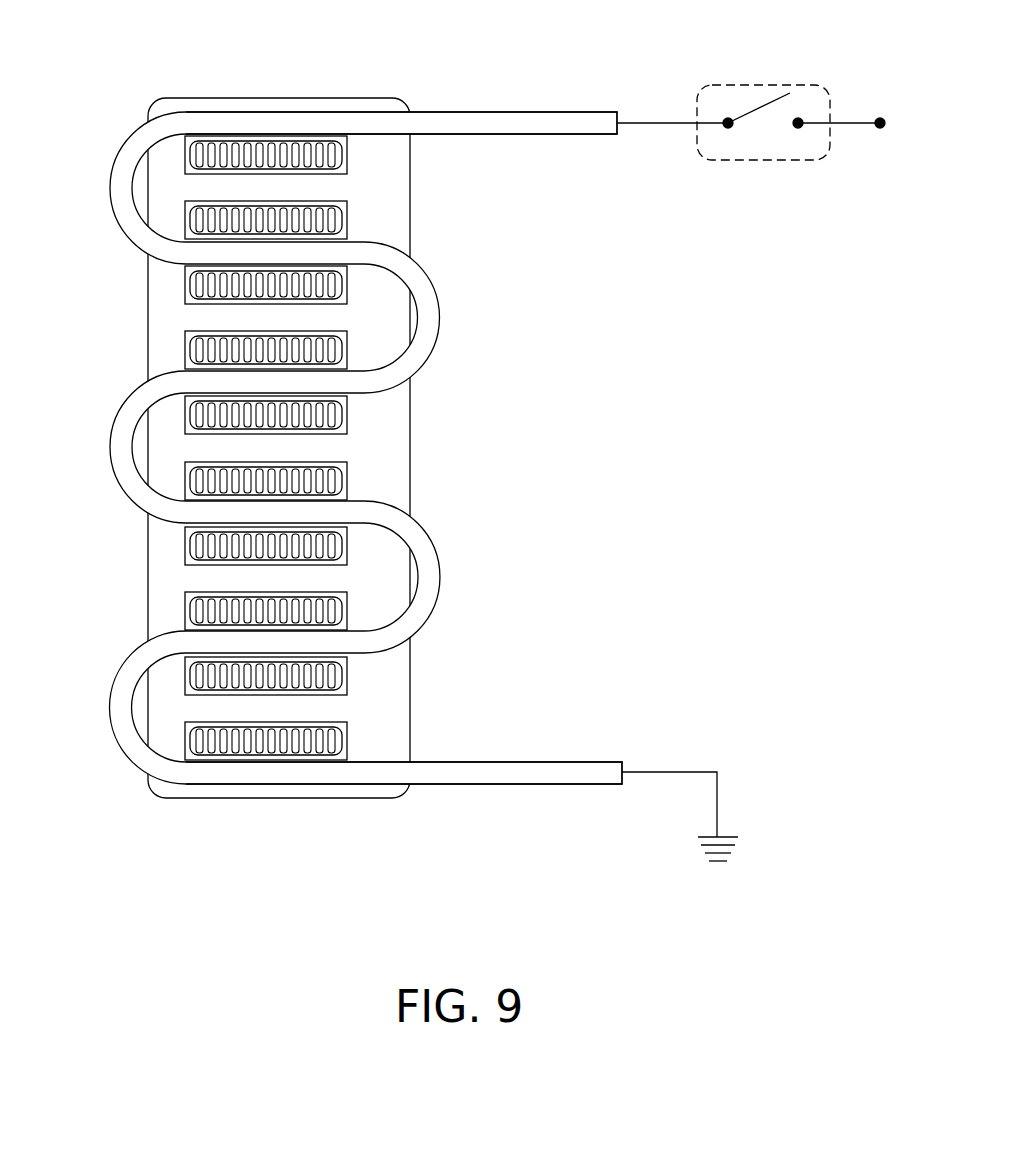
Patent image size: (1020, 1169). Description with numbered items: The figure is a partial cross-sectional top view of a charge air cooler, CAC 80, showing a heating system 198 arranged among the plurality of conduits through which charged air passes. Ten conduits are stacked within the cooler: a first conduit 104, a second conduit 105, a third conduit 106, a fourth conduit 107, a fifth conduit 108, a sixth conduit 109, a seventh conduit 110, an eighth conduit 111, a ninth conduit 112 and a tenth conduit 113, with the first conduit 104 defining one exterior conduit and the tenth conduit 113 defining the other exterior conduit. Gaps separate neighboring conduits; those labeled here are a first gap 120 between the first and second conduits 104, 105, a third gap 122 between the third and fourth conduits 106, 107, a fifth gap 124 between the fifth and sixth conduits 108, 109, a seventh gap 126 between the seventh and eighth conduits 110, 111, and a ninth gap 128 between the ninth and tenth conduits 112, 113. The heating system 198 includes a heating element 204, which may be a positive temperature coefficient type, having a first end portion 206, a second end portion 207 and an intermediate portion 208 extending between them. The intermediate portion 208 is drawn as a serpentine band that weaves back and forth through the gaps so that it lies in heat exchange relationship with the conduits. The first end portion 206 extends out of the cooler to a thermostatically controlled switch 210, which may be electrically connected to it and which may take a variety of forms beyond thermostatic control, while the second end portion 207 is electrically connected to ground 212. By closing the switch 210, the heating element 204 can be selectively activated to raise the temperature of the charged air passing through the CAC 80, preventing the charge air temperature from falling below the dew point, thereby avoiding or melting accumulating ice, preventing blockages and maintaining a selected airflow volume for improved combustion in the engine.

The charge air cooler 80 is at (217, 845).
The first conduit 104 is at (345, 155).
The second conduit 105 is at (345, 220).
The third conduit 106 is at (345, 285).
The fourth conduit 107 is at (345, 351).
The fifth conduit 108 is at (345, 416).
The sixth conduit 109 is at (345, 481).
The seventh conduit 110 is at (345, 546).
The eighth conduit 111 is at (345, 611).
The ninth conduit 112 is at (345, 676).
The tenth conduit 113 is at (345, 741).
The first gap 120 is at (207, 188).
The third gap 122 is at (208, 317).
The fifth gap 124 is at (208, 448).
The seventh gap 126 is at (210, 578).
The ninth gap 128 is at (210, 708).
The heating system 198 is at (87, 129).
The heating element 204 is at (437, 102).
The first end portion 206 is at (590, 136).
The second end portion 207 is at (603, 754).
The intermediate portion 208 is at (133, 408).
The thermostatically controlled switch 210 is at (808, 220).
The ground 212 is at (684, 886).